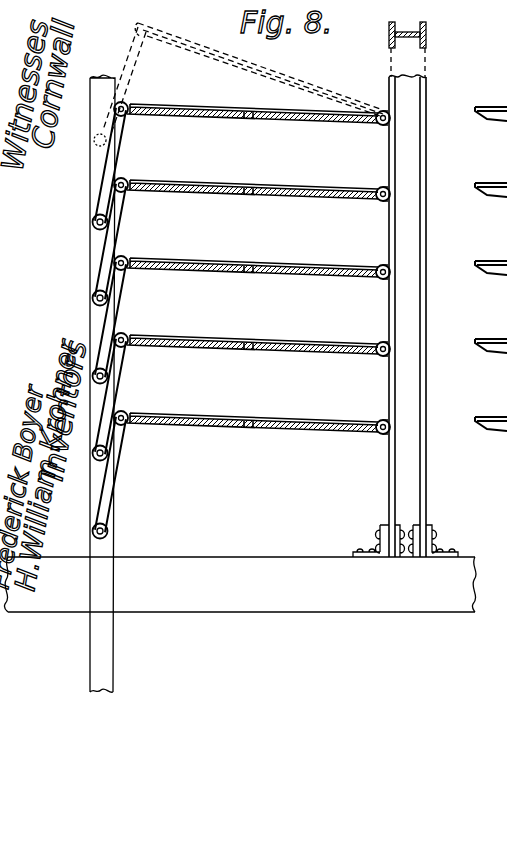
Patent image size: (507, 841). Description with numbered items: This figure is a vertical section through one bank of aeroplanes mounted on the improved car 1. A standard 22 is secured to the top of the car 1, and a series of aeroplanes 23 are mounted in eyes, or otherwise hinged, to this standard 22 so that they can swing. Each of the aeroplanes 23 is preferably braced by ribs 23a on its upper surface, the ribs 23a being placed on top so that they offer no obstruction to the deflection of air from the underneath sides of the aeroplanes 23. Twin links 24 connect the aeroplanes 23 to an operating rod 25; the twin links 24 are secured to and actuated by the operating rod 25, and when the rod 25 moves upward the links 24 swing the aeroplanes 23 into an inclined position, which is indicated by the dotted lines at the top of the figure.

The car 1 is at (213, 565).
The standard 22 is at (425, 80).
The aeroplanes 23 is at (243, 118).
The ribs 23a is at (213, 262).
The twin links 24 is at (108, 320).
The operating rods 25 is at (97, 182).